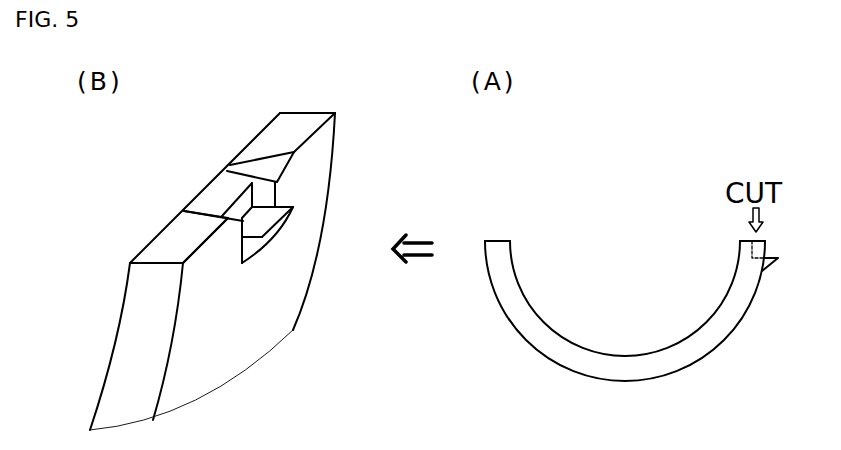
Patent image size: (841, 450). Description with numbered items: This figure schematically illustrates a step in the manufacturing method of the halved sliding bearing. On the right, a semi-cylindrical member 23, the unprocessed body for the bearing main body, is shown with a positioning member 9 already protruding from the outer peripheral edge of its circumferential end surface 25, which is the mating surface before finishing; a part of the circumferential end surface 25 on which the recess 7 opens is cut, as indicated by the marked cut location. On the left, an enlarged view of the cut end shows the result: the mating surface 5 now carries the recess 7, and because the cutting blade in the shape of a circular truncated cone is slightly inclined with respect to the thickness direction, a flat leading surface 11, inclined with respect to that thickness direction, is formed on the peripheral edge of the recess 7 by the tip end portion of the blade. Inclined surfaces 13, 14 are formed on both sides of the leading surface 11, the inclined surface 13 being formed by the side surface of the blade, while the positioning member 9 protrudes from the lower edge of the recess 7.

The mating surface 5 is at (158, 257).
The recess 7 is at (245, 203).
The positioning member 9 is at (273, 233).
The leading surface 11 is at (210, 198).
The inclined surface 13 is at (267, 167).
The inclined surface 14 is at (205, 203).
The semi-cylindrical member 23 is at (248, 362).
The circumferential end surface 25 is at (747, 240).